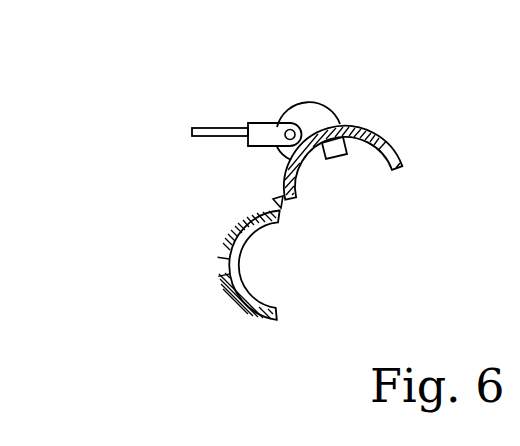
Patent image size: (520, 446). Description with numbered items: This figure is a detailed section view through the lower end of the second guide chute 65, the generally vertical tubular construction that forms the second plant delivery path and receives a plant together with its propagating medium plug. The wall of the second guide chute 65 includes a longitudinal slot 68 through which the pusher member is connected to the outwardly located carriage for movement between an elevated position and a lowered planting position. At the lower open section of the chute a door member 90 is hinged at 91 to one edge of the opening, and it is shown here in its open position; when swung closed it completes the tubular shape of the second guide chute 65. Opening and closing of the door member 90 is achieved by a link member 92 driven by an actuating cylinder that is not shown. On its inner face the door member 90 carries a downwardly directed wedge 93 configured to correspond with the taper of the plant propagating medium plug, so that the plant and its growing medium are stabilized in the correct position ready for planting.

The link member 92 is at (220, 128).
The door member 90 is at (397, 152).
The wedge 93 is at (338, 153).
The hinge 91 is at (273, 199).
The longitudinal slot 68 is at (218, 266).
The second guide chute 65 is at (238, 312).